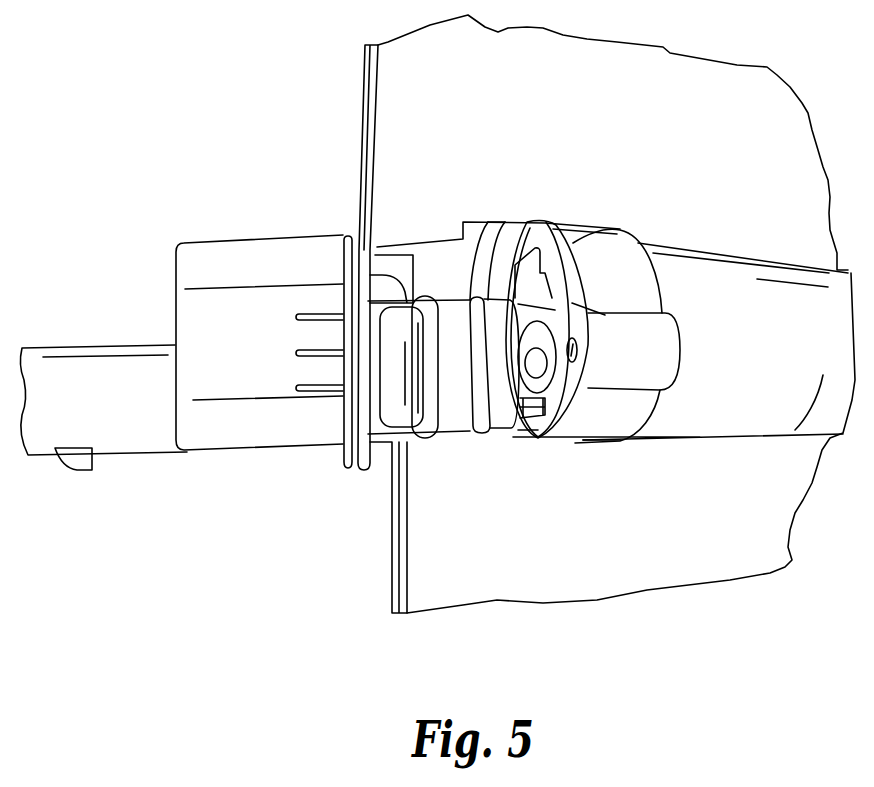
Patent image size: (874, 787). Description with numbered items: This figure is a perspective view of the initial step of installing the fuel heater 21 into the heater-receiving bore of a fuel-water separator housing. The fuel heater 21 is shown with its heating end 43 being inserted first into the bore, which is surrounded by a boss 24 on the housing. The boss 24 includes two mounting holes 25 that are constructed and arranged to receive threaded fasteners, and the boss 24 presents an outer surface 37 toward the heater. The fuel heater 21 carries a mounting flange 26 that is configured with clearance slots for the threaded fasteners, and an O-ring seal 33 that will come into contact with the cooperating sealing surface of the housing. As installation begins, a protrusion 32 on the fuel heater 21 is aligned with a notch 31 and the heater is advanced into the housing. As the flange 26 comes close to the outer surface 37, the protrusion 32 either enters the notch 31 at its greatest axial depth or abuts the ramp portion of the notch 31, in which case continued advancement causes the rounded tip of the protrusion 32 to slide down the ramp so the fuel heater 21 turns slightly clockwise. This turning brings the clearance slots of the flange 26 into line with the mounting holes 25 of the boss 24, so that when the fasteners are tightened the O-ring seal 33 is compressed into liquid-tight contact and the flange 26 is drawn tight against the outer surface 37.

The fuel heater 21 is at (246, 457).
The boss 24 is at (598, 257).
The mounting holes 25 is at (565, 388).
The mounting flange 26 is at (352, 461).
The notch 31 is at (531, 222).
The protrusion 32 is at (370, 272).
The O-ring seal 33 is at (475, 288).
The outer surface 37 is at (548, 222).
The heating end 43 is at (513, 434).